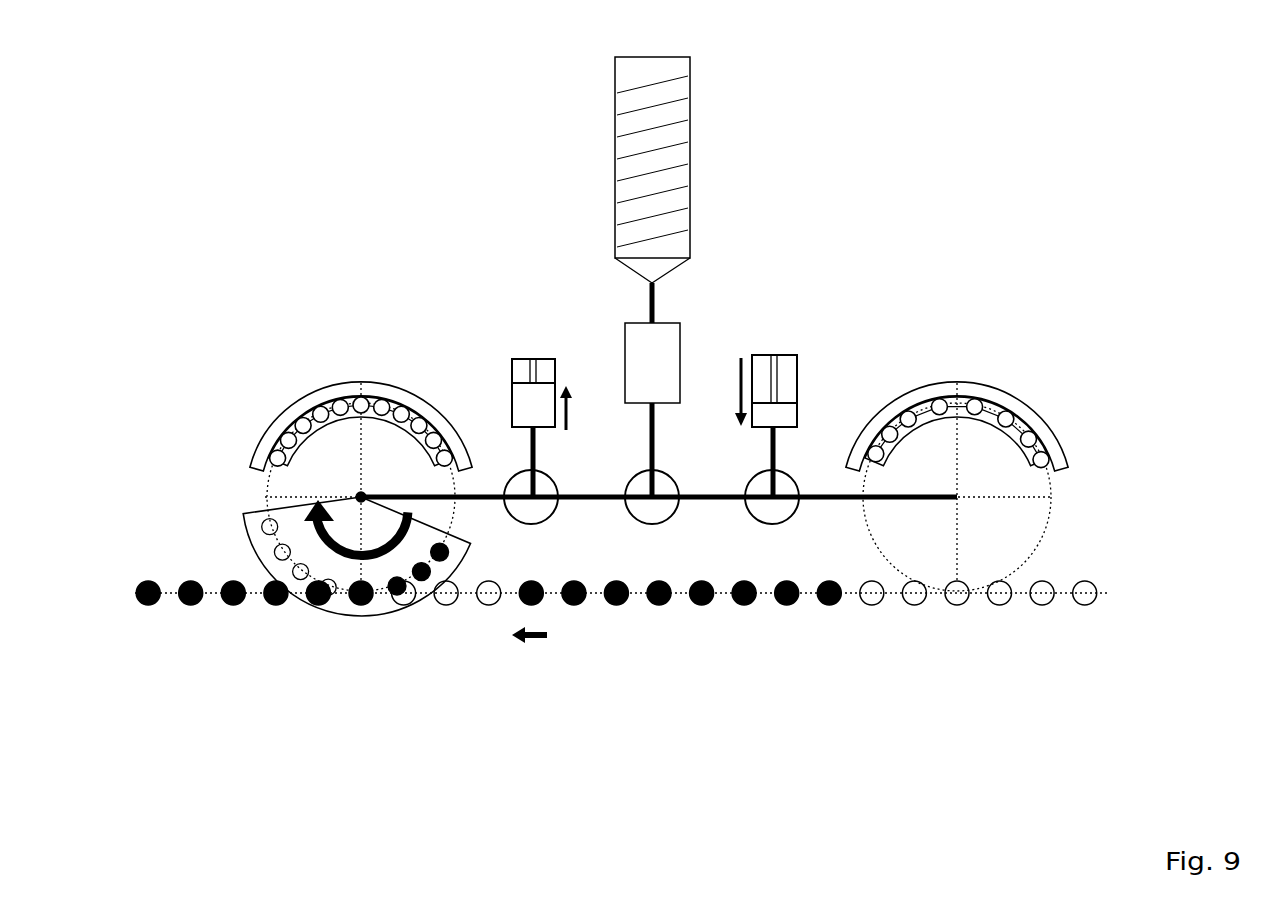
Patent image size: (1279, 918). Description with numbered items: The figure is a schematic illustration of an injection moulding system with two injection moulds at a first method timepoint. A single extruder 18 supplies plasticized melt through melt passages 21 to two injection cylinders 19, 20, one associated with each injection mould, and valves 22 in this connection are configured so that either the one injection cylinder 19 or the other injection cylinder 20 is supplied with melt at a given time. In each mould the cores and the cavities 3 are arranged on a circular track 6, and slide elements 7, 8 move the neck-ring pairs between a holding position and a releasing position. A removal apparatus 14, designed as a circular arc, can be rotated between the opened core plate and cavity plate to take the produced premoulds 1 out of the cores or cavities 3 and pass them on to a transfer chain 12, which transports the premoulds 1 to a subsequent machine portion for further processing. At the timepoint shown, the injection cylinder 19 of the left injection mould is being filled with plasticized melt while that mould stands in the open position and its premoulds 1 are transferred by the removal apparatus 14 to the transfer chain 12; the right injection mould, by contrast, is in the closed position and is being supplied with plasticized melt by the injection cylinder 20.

The premoulds 1 is at (620, 607).
The cavities 3 is at (428, 394).
The circular track 6 is at (1051, 505).
The slide element 7 is at (275, 422).
The slide element 8 is at (330, 417).
The transfer chain 12 is at (622, 674).
The removal apparatus 14 is at (385, 605).
The extruder 18 is at (672, 157).
The injection cylinder 19 is at (520, 360).
The injection cylinder 20 is at (775, 358).
The melt passages 21 is at (705, 502).
The valves 22 is at (787, 520).